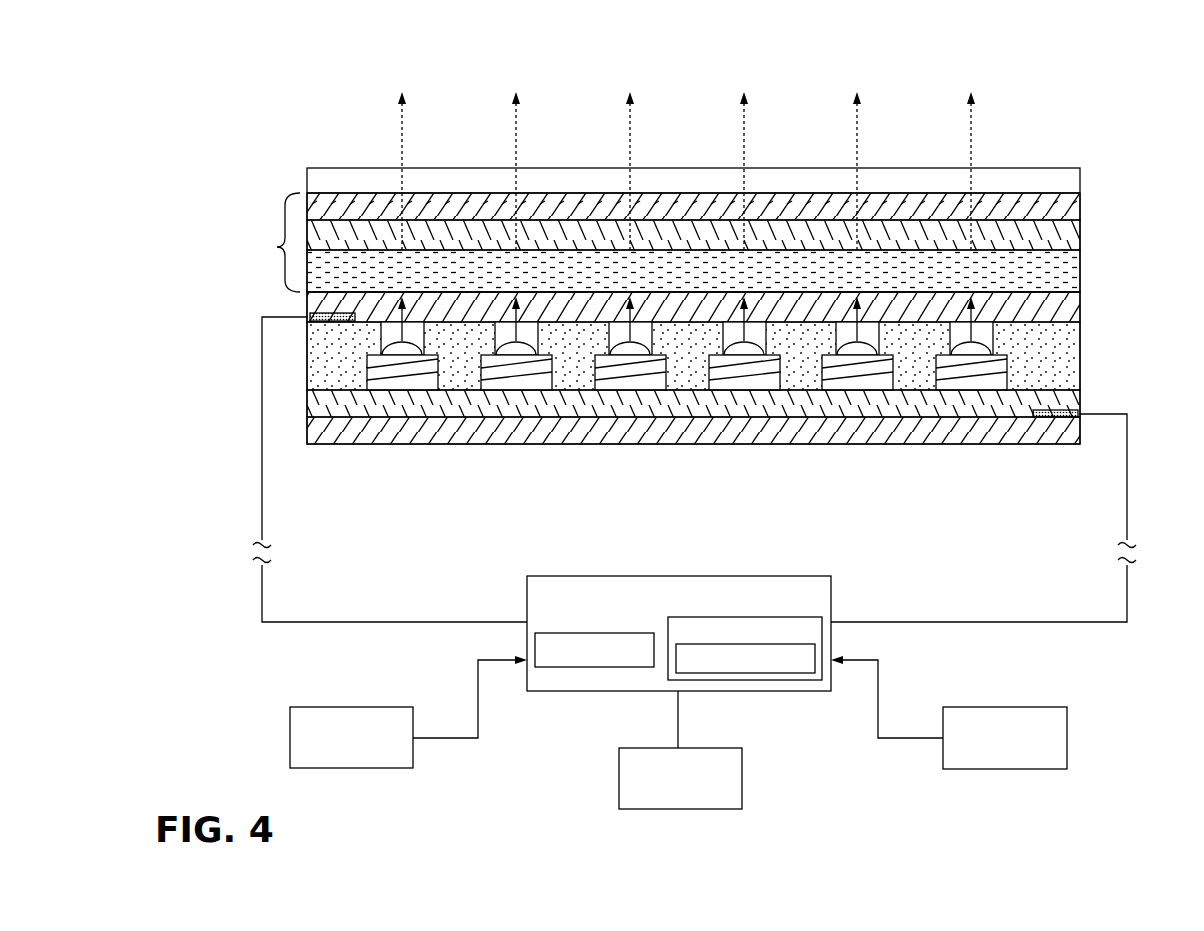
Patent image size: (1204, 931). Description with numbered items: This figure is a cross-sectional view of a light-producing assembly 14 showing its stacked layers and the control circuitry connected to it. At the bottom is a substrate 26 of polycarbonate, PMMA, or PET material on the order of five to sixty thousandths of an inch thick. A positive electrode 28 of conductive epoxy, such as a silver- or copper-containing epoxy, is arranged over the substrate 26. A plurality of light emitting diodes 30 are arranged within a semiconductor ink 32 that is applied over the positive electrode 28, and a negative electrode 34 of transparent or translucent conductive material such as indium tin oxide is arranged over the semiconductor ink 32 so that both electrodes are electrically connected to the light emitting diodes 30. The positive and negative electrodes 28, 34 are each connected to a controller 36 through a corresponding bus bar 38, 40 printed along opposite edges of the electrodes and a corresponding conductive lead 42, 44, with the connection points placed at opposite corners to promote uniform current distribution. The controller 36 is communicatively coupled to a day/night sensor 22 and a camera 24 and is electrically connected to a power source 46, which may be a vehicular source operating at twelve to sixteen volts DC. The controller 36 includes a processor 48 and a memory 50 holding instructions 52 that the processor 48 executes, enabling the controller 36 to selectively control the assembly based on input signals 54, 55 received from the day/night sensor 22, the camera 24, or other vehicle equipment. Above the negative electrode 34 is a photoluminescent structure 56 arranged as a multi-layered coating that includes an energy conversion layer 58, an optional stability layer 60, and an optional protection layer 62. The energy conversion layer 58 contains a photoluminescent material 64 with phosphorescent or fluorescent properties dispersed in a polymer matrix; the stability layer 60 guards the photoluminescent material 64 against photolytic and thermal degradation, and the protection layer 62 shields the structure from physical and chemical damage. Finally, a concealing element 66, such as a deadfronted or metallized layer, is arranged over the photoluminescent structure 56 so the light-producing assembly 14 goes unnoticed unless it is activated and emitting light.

The light-producing assembly 14 is at (1091, 92).
The day/night sensor 22 is at (363, 768).
The camera 24 is at (1010, 769).
The substrate 26 is at (1074, 433).
The positive electrode 28 is at (307, 405).
The light emitting diodes 30 is at (497, 383).
The semiconductor ink 32 is at (1068, 370).
The negative electrode 34 is at (1076, 313).
The controller 36 is at (738, 576).
The bus bar 38 is at (1078, 400).
The bus bar 40 is at (306, 313).
The conductive lead 42 is at (1128, 478).
The conductive lead 44 is at (262, 475).
The power source 46 is at (693, 810).
The processor 48 is at (560, 668).
The memory 50 is at (805, 617).
The instructions 52 is at (819, 691).
The input signal 54 is at (472, 708).
The input signal 55 is at (880, 707).
The photoluminescent structure 56 is at (274, 242).
The energy conversion layer 58 is at (1081, 258).
The stability layer 60 is at (1081, 243).
The protection layer 62 is at (1081, 212).
The photoluminescent material 64 is at (1062, 278).
The concealing element 66 is at (777, 168).